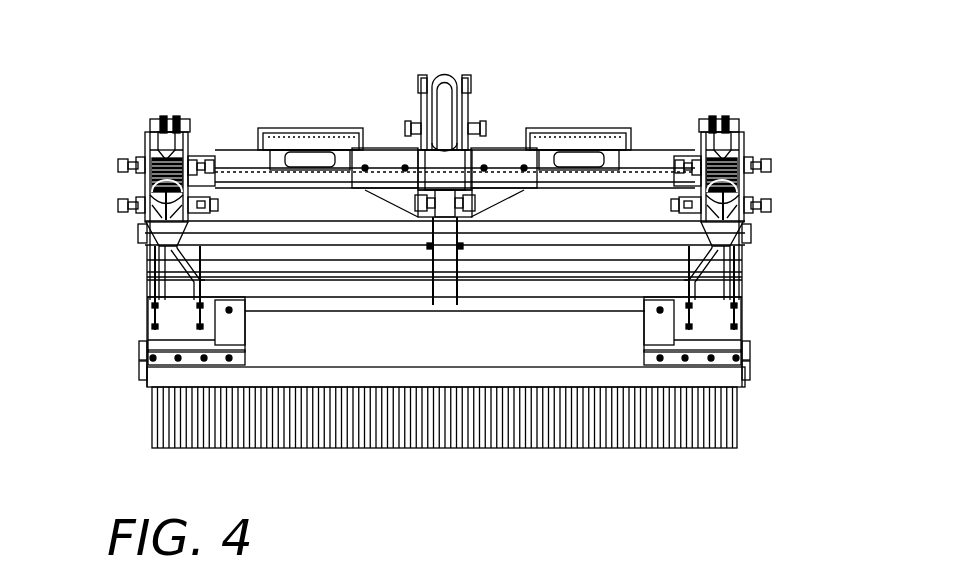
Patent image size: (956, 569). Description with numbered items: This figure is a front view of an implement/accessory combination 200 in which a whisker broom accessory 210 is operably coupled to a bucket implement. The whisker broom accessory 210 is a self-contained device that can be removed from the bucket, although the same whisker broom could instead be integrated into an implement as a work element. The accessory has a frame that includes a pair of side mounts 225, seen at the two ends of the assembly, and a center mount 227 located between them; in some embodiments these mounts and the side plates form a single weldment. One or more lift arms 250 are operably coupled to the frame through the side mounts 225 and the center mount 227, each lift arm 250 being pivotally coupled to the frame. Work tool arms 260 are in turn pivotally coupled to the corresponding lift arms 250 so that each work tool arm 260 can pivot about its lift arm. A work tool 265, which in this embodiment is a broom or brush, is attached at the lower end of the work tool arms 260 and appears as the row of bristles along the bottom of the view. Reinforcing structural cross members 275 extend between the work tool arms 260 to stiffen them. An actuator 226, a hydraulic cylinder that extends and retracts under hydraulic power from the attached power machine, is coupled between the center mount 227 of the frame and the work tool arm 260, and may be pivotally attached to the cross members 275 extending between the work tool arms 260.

The implement/accessory combination 200 is at (235, 47).
The whisker broom accessory 210 is at (118, 279).
The side mounts 225 is at (148, 105).
The actuator 226 is at (446, 105).
The center mount 227 is at (427, 165).
The lift arms 250 is at (146, 238).
The work tool arms 260 is at (155, 325).
The work tool 265 is at (462, 418).
The reinforcing structural cross members 275 is at (360, 245).